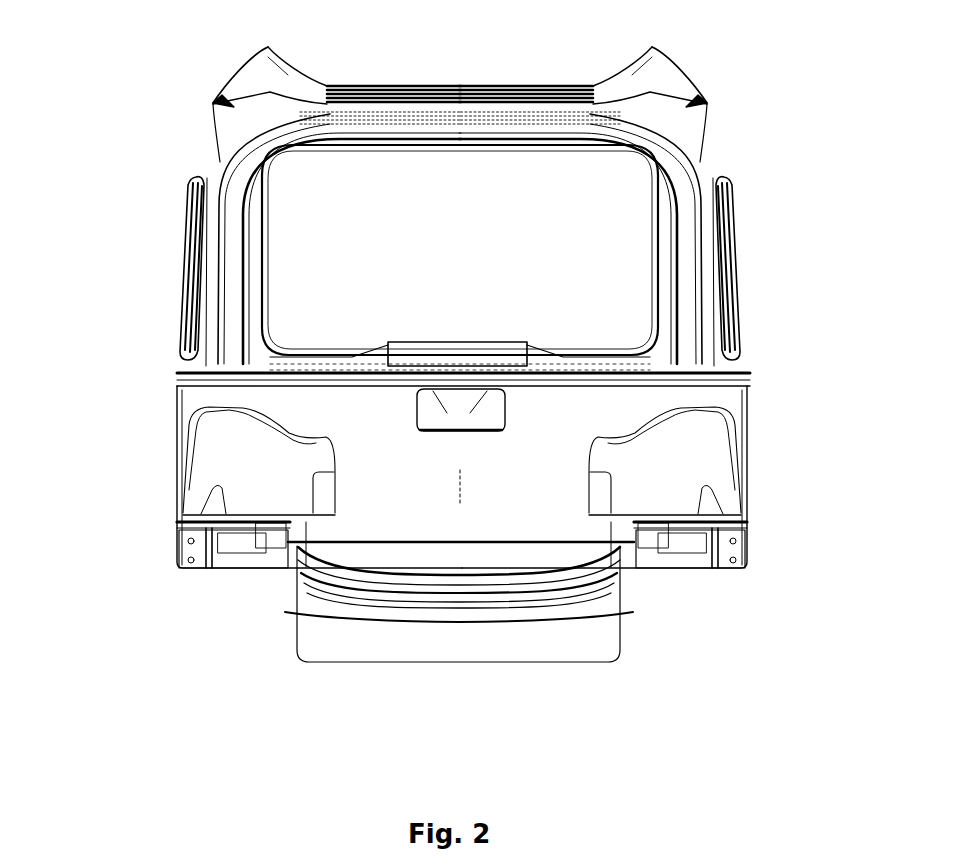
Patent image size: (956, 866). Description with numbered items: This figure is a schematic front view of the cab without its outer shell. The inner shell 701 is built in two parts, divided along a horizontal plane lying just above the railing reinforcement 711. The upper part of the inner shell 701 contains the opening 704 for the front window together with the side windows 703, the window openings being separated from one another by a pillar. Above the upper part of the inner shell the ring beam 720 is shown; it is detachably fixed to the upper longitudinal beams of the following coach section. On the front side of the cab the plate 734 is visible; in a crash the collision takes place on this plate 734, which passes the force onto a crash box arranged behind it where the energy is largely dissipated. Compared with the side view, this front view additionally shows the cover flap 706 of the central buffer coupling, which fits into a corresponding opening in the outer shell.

The inner shell 701 is at (691, 141).
The side windows 703 is at (173, 277).
The opening for the front window 704 is at (622, 236).
The cover flap of the central buffer coupling 706 is at (340, 603).
The railing reinforcement 711 is at (320, 388).
The ring beam 720 is at (256, 72).
The plate 734 is at (557, 412).